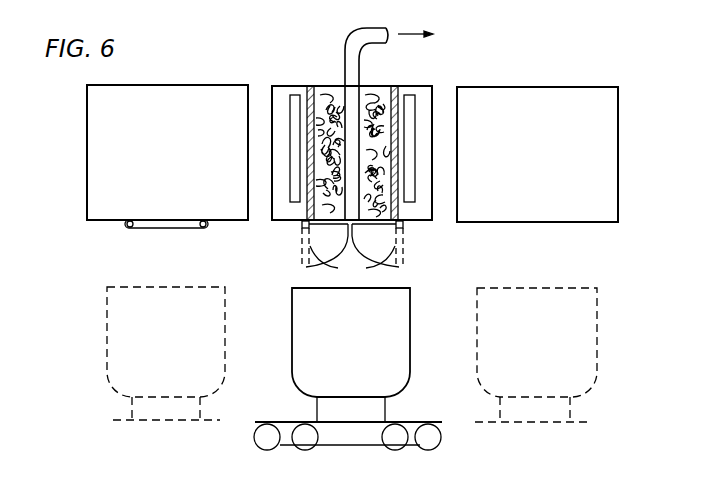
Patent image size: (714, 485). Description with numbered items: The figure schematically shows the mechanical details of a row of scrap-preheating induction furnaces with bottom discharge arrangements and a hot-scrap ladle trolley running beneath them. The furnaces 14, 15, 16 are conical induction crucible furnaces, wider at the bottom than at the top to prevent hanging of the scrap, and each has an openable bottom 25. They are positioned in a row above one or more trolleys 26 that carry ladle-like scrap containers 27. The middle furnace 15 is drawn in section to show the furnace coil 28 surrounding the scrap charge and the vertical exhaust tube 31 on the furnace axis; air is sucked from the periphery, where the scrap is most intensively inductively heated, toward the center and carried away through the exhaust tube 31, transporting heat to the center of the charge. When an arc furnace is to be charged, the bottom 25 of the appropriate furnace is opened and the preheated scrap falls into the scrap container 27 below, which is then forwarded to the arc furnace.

The induction furnace 14 is at (171, 83).
The induction furnace 15 is at (415, 87).
The induction furnace 16 is at (542, 87).
The openable bottom 25 is at (352, 252).
The trolley 26 is at (355, 437).
The scrap container 27 is at (403, 338).
The furnace coil 28 is at (300, 103).
The vertical exhaust tube 31 is at (373, 28).